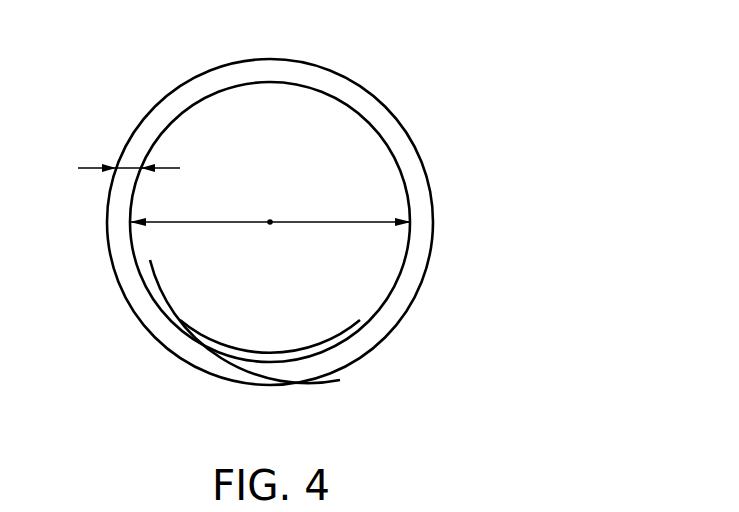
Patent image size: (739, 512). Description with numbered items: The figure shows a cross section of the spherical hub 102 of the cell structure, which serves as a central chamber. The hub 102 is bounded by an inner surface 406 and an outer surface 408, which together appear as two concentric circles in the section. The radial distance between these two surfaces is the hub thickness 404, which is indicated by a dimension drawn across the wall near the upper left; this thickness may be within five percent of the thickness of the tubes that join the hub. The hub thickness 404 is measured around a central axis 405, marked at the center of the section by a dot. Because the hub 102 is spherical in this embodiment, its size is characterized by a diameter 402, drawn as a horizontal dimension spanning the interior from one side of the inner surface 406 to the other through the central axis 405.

The hub 102 is at (305, 196).
The diameter 402 is at (330, 224).
The hub thickness 404 is at (90, 167).
The central axis 405 is at (271, 221).
The inner surface 406 is at (284, 363).
The outer surface 408 is at (196, 368).